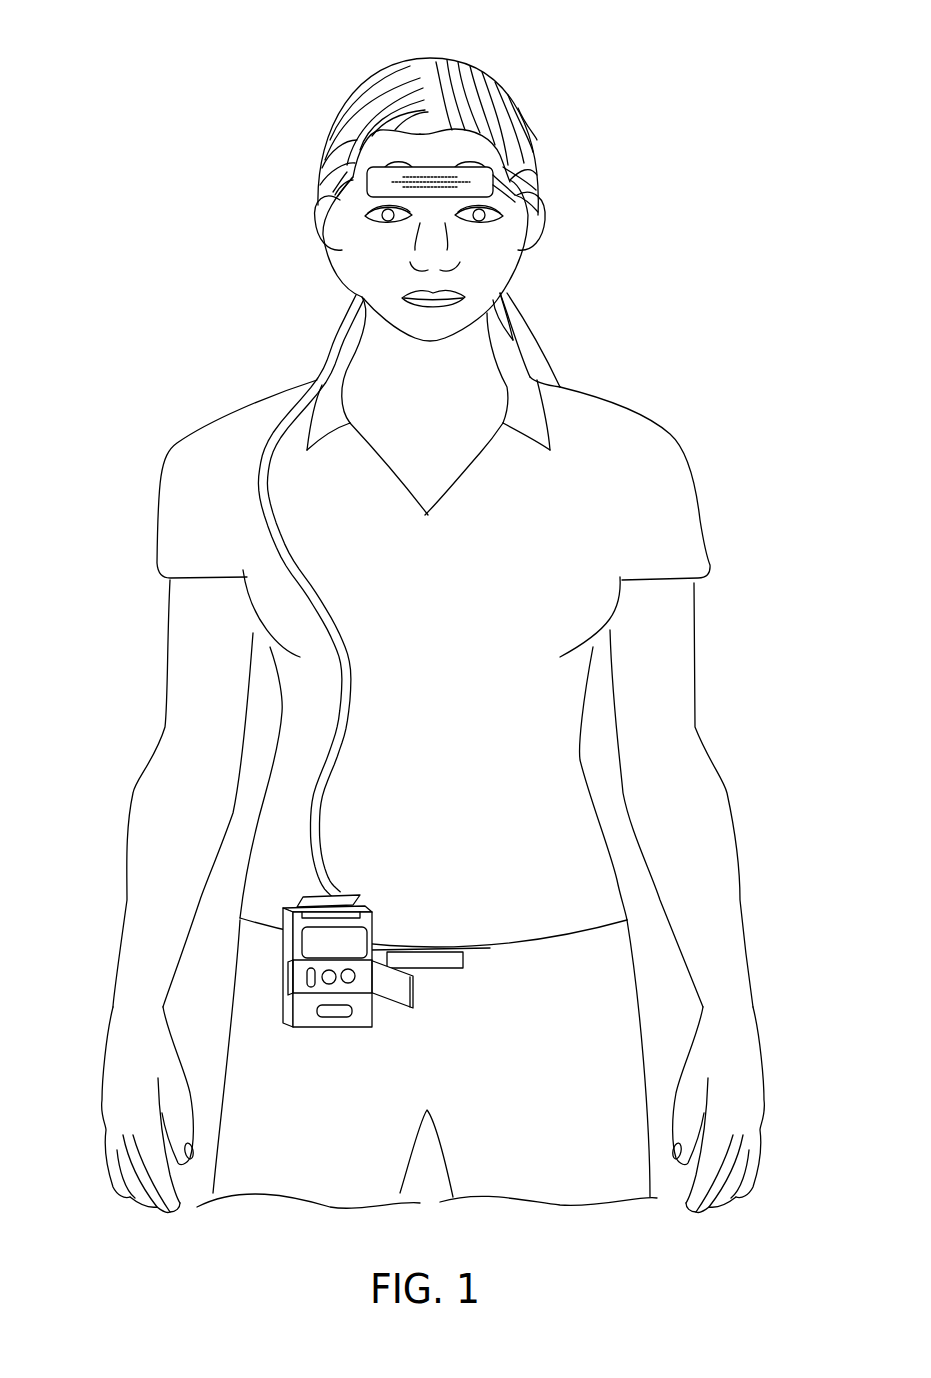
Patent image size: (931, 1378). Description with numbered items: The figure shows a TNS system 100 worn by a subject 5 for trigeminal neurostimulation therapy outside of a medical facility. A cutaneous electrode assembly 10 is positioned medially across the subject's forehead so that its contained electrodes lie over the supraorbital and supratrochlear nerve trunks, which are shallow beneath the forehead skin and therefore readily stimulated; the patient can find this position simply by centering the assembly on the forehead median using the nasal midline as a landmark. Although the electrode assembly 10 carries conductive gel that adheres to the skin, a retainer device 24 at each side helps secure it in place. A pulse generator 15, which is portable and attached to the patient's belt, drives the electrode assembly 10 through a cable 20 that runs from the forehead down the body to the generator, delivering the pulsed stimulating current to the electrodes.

The TNS system 100 is at (133, 490).
The headset 5 is at (556, 86).
The cutaneous electrode assembly 10 is at (421, 152).
The retainer device 24 is at (365, 180).
The cable 20 is at (351, 637).
The pulse generator 15 is at (311, 1028).